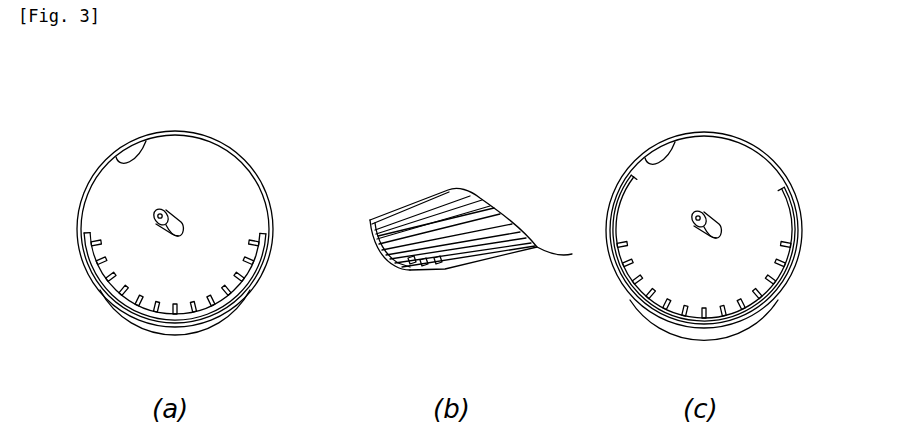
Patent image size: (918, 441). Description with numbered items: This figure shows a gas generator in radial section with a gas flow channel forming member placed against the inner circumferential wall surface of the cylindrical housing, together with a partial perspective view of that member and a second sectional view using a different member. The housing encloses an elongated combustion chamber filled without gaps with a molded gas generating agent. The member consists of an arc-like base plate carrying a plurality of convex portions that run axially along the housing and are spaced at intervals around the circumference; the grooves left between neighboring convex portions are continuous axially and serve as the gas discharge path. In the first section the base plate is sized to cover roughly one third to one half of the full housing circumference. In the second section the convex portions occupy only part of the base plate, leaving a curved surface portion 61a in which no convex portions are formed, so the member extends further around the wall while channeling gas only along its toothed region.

The curved surface portion 61a is at (629, 190).